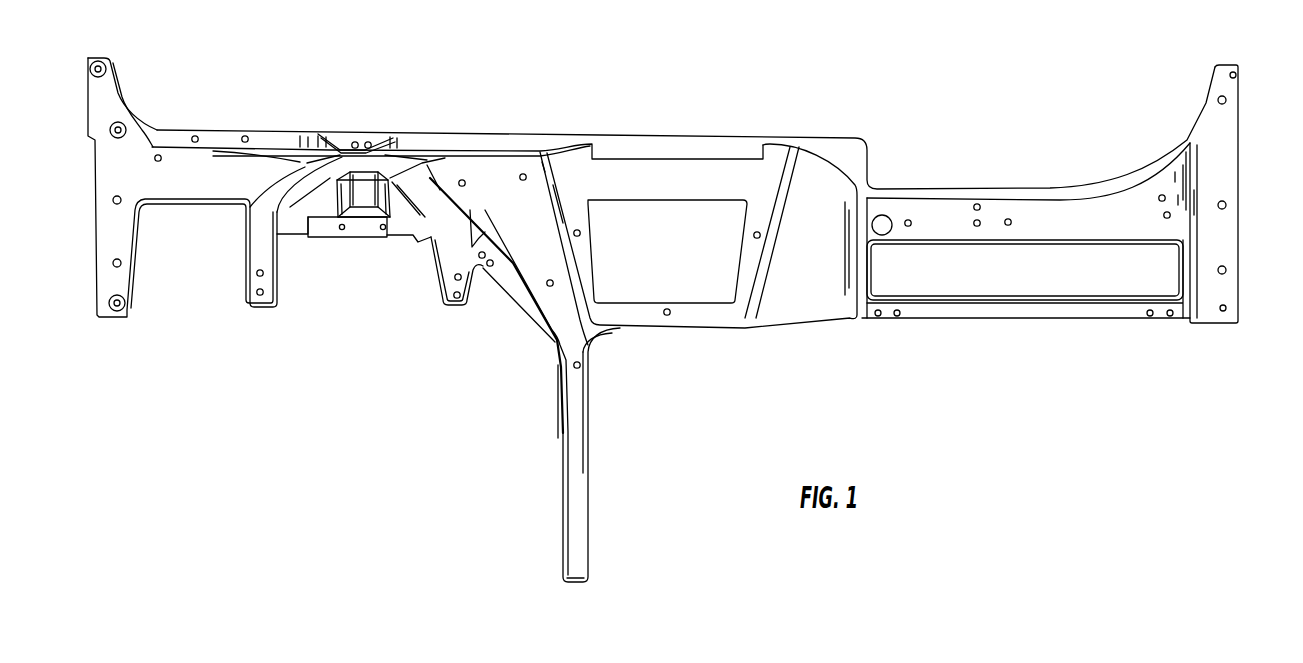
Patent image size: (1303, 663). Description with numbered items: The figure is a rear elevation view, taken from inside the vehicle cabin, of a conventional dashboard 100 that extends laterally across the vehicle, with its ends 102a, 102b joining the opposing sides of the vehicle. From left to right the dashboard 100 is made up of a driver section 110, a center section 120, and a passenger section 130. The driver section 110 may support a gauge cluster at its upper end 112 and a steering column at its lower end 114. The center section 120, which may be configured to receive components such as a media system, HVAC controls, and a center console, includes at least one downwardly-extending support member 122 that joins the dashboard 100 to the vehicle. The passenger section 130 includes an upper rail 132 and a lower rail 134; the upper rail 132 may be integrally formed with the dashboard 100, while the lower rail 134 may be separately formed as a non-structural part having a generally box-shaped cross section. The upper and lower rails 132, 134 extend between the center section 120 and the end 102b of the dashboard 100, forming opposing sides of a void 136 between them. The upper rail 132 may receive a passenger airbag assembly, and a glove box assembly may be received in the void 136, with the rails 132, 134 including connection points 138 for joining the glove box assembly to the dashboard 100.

The dashboard 100 is at (920, 92).
The end 102a is at (68, 205).
The end 102b is at (1252, 172).
The driver section 110 is at (325, 122).
The upper end 112 is at (397, 143).
The lower end 114 is at (347, 295).
The center section 120 is at (700, 140).
The downwardly-extending support member 122 is at (575, 528).
The passenger section 130 is at (1027, 245).
The upper rail 132 is at (943, 212).
The lower rail 134 is at (1062, 310).
The void 136 is at (987, 277).
The connection points 138 is at (878, 317).